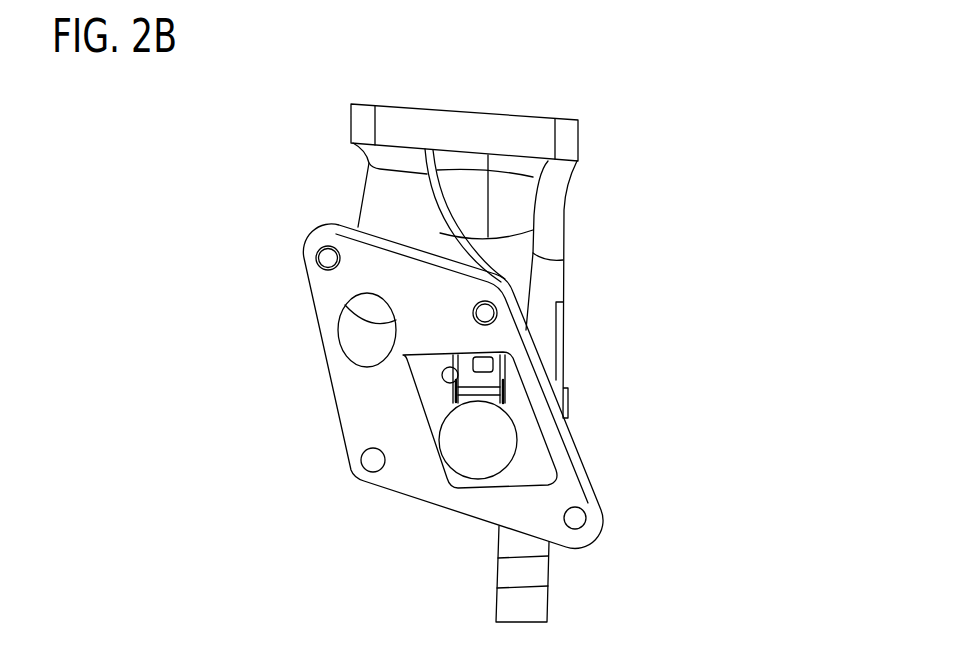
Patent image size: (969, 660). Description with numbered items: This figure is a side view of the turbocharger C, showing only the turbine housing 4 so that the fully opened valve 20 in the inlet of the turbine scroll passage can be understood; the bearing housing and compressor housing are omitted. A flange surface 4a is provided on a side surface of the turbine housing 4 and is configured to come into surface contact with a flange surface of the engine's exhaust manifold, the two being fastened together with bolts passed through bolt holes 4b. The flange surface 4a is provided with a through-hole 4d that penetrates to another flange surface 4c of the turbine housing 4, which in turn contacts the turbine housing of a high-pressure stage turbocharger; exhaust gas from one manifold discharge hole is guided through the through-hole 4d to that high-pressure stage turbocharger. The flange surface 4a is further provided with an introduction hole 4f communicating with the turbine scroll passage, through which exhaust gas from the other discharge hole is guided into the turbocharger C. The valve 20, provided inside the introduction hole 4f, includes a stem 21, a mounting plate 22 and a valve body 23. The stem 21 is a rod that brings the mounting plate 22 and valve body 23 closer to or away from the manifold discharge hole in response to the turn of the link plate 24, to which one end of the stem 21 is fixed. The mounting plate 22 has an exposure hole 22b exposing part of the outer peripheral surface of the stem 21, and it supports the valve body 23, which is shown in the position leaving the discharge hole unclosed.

The turbine housing 4 is at (360, 224).
The flange surface 4a is at (334, 398).
The bolt holes 4b is at (328, 258).
The flange surface 4c is at (448, 108).
The through-hole 4d is at (370, 340).
The introduction hole 4f is at (508, 467).
The valve 20 is at (498, 490).
The stem 21 is at (480, 384).
The mounting plate 22 is at (508, 377).
The exposure hole 22b is at (444, 380).
The valve body 23 is at (440, 444).
The link plate 24 is at (563, 334).
The turbocharger C is at (673, 91).